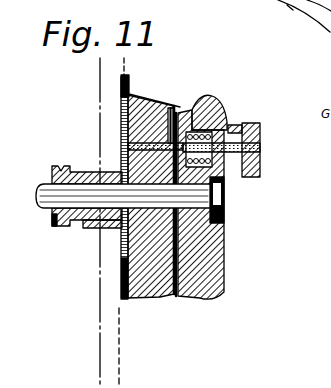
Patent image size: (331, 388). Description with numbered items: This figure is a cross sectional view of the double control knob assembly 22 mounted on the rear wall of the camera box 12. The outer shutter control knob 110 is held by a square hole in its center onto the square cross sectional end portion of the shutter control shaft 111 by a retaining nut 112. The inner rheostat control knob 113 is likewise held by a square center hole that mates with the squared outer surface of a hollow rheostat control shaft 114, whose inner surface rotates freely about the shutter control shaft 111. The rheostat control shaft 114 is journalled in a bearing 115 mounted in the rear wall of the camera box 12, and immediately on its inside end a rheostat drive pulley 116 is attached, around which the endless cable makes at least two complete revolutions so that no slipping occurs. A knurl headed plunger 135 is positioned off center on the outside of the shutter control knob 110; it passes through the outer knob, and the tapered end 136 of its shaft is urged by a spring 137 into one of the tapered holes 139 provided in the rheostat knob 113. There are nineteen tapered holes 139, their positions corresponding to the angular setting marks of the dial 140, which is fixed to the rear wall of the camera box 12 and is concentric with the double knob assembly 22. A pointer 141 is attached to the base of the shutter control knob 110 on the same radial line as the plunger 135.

The camera box 12 is at (99, 342).
The double control knob assembly 22 is at (202, 316).
The shutter control knob 110 is at (220, 270).
The shutter control shaft 111 is at (88, 218).
The retaining nut 112 is at (222, 202).
The rheostat control knob 113 is at (156, 302).
The rheostat control shaft 114 is at (98, 170).
The bearing 115 is at (100, 230).
The rheostat drive pulley 116 is at (50, 227).
The knurl headed plunger 135 is at (260, 143).
The tapered end 136 is at (176, 113).
The spring 137 is at (213, 110).
The tapered holes 139 is at (150, 142).
The dial 140 is at (124, 303).
The pointer 141 is at (128, 90).